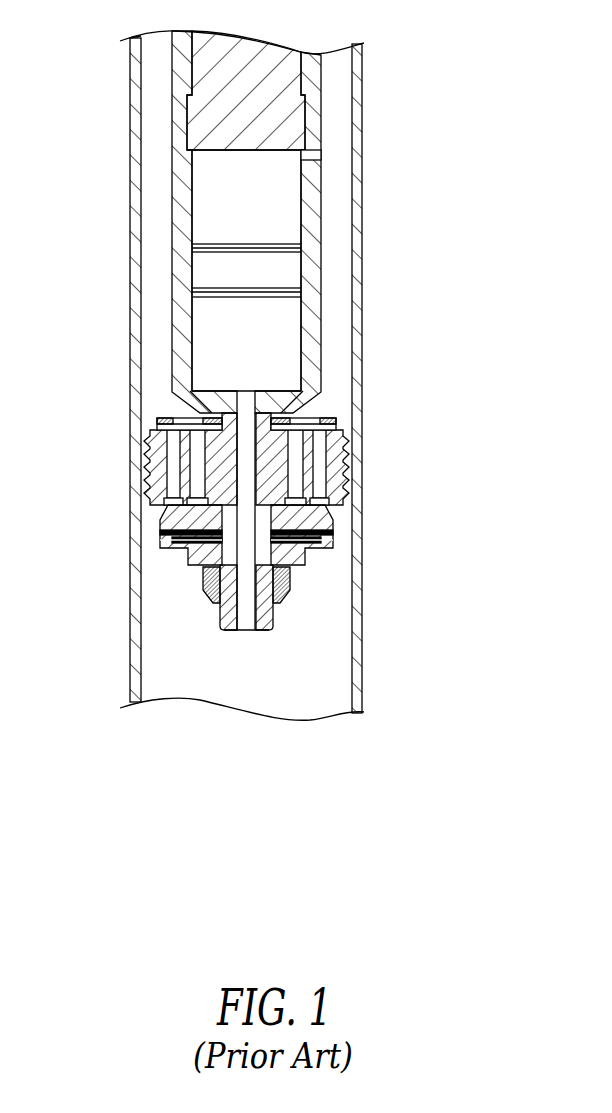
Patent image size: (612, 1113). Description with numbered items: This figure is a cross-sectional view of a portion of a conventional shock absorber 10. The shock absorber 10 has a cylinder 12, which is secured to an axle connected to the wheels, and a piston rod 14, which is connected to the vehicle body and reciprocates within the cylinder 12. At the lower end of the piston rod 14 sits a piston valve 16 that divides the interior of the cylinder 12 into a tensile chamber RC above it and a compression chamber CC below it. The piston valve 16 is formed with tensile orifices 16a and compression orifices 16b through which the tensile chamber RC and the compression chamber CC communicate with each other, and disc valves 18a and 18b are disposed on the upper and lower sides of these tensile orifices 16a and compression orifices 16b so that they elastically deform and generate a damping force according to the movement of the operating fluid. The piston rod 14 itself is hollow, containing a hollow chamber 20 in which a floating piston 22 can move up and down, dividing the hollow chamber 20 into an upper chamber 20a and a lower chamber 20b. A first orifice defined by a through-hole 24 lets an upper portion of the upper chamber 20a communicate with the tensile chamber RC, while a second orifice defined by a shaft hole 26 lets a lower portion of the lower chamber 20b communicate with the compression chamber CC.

The shock absorber 10 is at (392, 62).
The cylinder 12 is at (362, 108).
The piston rod 14 is at (331, 214).
The piston valve 16 is at (278, 459).
The tensile orifices 16a is at (301, 478).
The compression orifices 16b is at (321, 466).
The disc valve 18a is at (323, 545).
The disc valve 18b is at (330, 417).
The hollow chamber 20 is at (164, 270).
The upper chamber 20a is at (210, 224).
The lower chamber 20b is at (210, 321).
The floating piston 22 is at (290, 270).
The through-hole 24 is at (312, 154).
The shaft hole 26 is at (272, 608).
The tensile chamber RC is at (151, 137).
The compression chamber CC is at (164, 637).